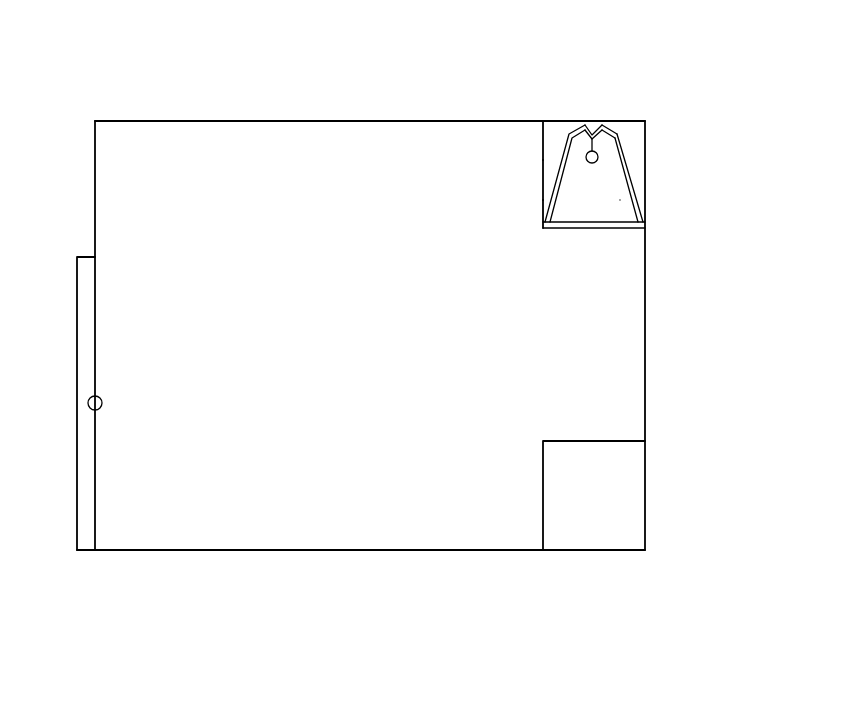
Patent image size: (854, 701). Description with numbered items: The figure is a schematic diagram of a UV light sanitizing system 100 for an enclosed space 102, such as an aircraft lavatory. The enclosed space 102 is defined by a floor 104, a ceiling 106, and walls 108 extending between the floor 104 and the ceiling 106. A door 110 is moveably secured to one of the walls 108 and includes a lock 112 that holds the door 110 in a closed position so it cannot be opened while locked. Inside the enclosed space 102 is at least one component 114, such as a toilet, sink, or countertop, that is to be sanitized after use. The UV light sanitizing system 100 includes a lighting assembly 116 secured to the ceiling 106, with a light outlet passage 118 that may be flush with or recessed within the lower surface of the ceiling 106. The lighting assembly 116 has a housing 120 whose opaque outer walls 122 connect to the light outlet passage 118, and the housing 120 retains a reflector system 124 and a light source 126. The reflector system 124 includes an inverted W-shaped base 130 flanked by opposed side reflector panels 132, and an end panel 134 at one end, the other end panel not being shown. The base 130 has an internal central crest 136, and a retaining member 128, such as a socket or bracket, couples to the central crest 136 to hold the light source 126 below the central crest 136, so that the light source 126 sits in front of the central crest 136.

The UV light sanitizing system 100 is at (649, 87).
The enclosed space 102 is at (645, 377).
The floor 104 is at (370, 550).
The ceiling 106 is at (370, 122).
The walls 108 is at (96, 137).
The door 110 is at (88, 329).
The lock 112 is at (101, 398).
The component 114 is at (558, 440).
The lighting assembly 116 is at (543, 180).
The light outlet passage 118 is at (554, 230).
The housing 120 is at (543, 210).
The opaque outer walls 122 is at (543, 137).
The reflector system 124 is at (635, 185).
The light source 126 is at (593, 163).
The retaining member 128 is at (613, 137).
The base 130 is at (578, 128).
The side reflector panels 132 is at (563, 145).
The end panel 134 is at (620, 200).
The central crest 136 is at (593, 143).